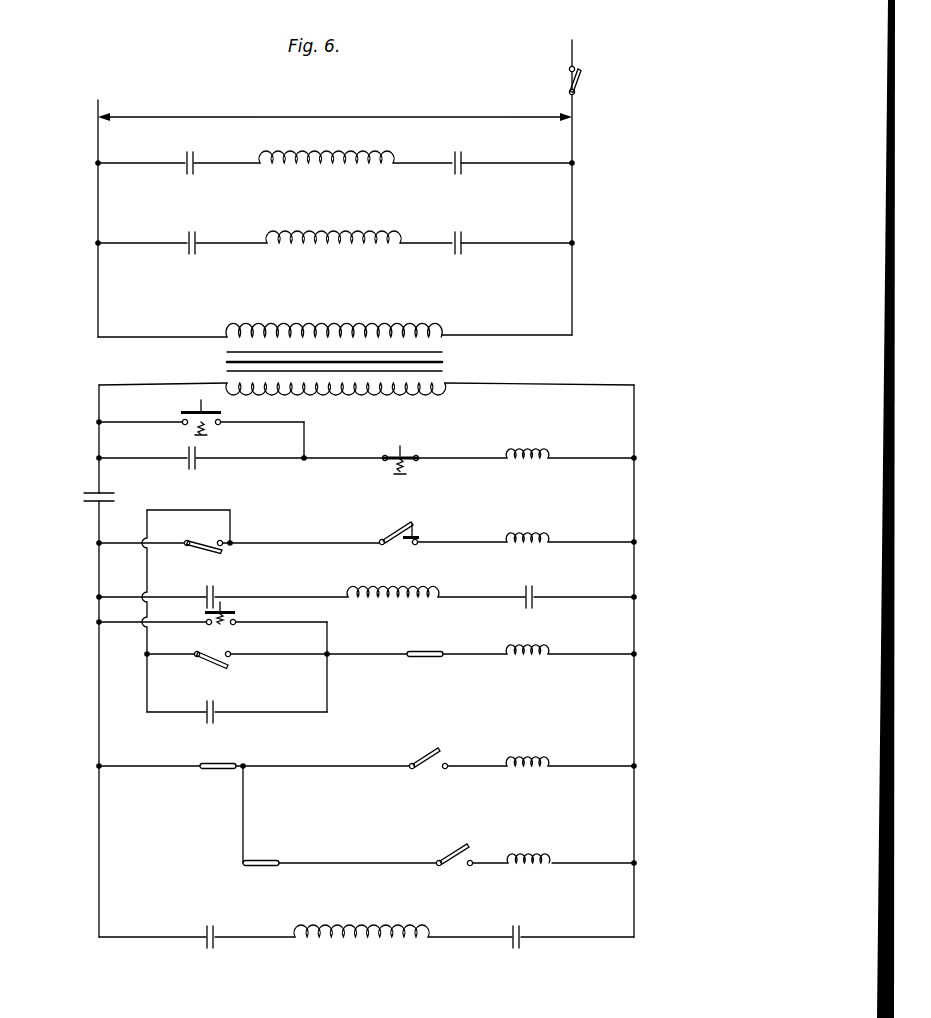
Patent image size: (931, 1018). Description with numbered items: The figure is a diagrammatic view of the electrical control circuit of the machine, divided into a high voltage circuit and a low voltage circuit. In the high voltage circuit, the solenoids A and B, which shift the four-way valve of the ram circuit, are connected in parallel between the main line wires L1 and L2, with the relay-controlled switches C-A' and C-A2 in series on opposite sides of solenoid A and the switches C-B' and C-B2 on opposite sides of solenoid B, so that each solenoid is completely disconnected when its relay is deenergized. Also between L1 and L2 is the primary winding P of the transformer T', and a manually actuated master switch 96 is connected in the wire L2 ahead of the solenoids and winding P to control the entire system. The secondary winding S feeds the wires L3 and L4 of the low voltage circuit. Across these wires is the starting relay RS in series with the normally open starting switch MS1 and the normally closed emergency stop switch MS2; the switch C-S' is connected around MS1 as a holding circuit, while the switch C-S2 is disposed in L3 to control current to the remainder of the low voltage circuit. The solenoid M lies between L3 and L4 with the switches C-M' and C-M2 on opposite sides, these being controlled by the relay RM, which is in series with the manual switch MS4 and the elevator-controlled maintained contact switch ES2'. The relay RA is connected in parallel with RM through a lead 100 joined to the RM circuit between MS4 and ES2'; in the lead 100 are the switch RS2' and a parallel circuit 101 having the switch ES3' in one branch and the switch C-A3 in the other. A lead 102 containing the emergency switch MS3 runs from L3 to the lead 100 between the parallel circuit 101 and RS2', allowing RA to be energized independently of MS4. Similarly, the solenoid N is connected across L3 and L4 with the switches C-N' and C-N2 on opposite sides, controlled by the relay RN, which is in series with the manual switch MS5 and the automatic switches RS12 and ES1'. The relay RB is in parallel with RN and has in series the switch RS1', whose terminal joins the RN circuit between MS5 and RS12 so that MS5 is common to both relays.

The manually actuated switch 96 is at (581, 83).
The lead 100 is at (146, 572).
The parallel circuit 101 is at (146, 708).
The lead 102 is at (126, 624).
The main line wire L1 is at (97, 120).
The main line wire L2 is at (573, 179).
The wire L3 is at (98, 407).
The wire L4 is at (636, 432).
The solenoid A is at (331, 160).
The solenoid B is at (320, 240).
The primary winding P is at (348, 326).
The secondary winding S is at (330, 392).
The transformer T' is at (380, 358).
The solenoid M is at (398, 594).
The solenoid N is at (386, 944).
The switch C-A' is at (217, 150).
The switch C-A2 is at (462, 162).
The switch C-A3 is at (215, 720).
The switch C-B' is at (209, 256).
The switch C-B2 is at (462, 255).
The switch C-S' is at (222, 468).
The switch C-S2 is at (90, 505).
The switch C-M' is at (247, 588).
The switch C-M2 is at (533, 604).
The switch C-N' is at (236, 955).
The switch C-N2 is at (520, 946).
The starting switch MS1 is at (184, 408).
The emergency stop switch MS2 is at (416, 426).
The switch MS3 is at (231, 626).
The manual switch MS4 is at (192, 561).
The manual switch MS5 is at (217, 770).
The automatic switch ES1' is at (459, 840).
The maintained contact switch ES2' is at (398, 517).
The switch ES3' is at (204, 674).
The switch RS1' is at (435, 744).
The automatic switch RS12 is at (258, 862).
The switch RS2' is at (434, 635).
The starting relay RS is at (528, 462).
The relay RM is at (528, 546).
The relay RA is at (533, 658).
The relay RB is at (528, 770).
The relay RN is at (530, 868).